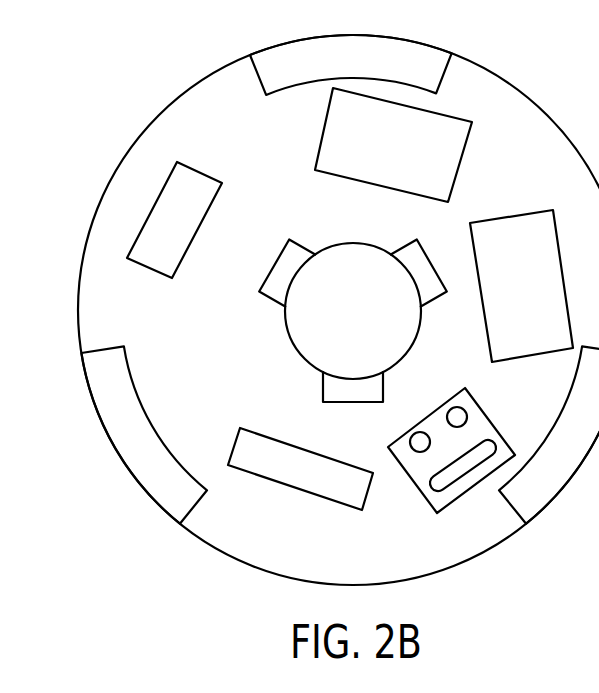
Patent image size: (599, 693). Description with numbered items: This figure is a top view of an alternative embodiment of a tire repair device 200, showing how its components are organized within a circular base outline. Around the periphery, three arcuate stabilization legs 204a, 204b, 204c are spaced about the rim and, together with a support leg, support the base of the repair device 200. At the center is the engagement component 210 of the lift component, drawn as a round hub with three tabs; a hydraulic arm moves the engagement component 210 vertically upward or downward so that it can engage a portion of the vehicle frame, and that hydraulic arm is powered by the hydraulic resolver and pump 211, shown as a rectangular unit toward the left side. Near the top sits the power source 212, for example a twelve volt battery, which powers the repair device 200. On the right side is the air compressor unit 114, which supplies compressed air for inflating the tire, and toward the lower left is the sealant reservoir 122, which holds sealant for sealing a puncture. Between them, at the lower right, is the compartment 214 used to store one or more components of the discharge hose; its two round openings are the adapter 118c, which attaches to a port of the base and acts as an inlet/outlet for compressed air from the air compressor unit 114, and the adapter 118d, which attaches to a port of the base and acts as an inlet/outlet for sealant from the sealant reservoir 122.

The repair device 200 is at (483, 64).
The stabilization leg 204a is at (153, 427).
The stabilization leg 204b is at (310, 83).
The stabilization leg 204c is at (557, 428).
The hydraulic resolver and pump 211 is at (153, 207).
The power source 212 is at (350, 180).
The air compressor unit 114 is at (510, 214).
The engagement component 210 is at (307, 362).
The sealant reservoir 122 is at (293, 488).
The compartment 214 is at (411, 478).
The adapter 118c is at (413, 436).
The adapter 118d is at (451, 408).